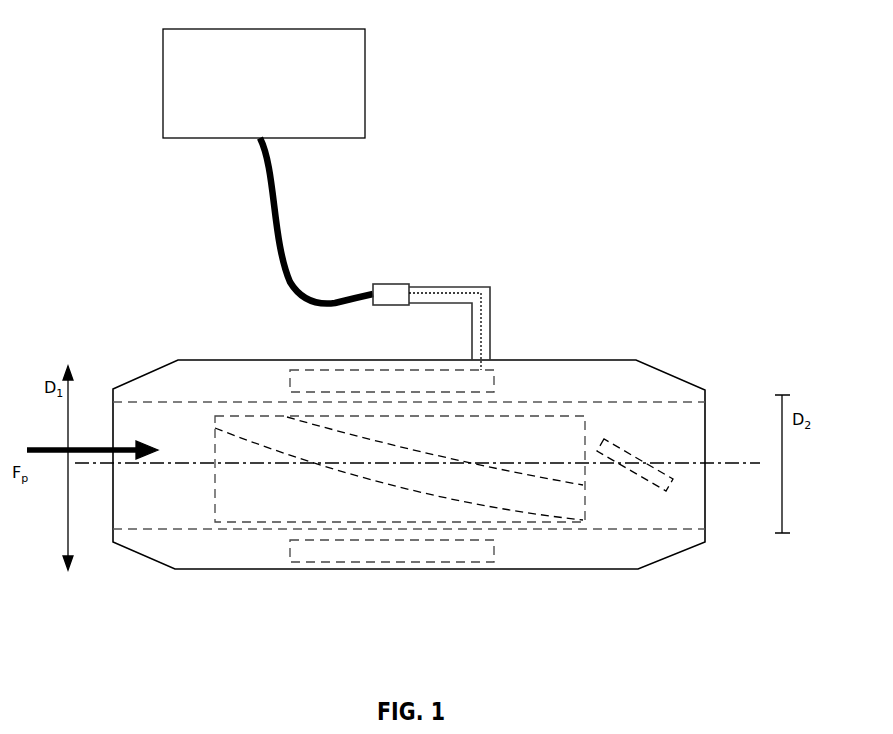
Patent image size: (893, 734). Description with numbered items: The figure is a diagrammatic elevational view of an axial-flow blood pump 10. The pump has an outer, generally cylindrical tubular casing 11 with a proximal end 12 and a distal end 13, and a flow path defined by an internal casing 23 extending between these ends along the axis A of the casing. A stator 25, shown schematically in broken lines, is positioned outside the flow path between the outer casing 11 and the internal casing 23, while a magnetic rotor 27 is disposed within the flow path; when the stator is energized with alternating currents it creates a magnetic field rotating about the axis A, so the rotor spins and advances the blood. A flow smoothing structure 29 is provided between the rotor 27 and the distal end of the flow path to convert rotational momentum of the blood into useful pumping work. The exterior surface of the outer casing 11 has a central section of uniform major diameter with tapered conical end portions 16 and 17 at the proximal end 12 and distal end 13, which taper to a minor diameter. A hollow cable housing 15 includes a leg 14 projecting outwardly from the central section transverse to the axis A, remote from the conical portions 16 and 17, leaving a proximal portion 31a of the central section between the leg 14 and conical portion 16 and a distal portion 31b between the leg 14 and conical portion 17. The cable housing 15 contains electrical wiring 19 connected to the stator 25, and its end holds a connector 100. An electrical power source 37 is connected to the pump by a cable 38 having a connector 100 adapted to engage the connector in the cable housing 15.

The blood pump 10 is at (352, 612).
The outer tubular casing 11 is at (580, 570).
The proximal end 12 is at (112, 503).
The distal end 13 is at (705, 507).
The leg 14 is at (492, 305).
The cable housing 15 is at (458, 283).
The conical end portion 16 is at (140, 375).
The conical end portion 17 is at (665, 370).
The electrical wiring 19 is at (477, 340).
The internal casing 23 is at (620, 532).
The stator 25 is at (318, 375).
The rotor 27 is at (290, 448).
The flow smoothing structure 29 is at (640, 452).
The proximal portion of central section 31a is at (206, 361).
The distal portion of central section 31b is at (587, 361).
The electrical power source 37 is at (365, 86).
The cable 38 is at (276, 195).
The connector 100 is at (388, 291).
The axis A is at (727, 465).